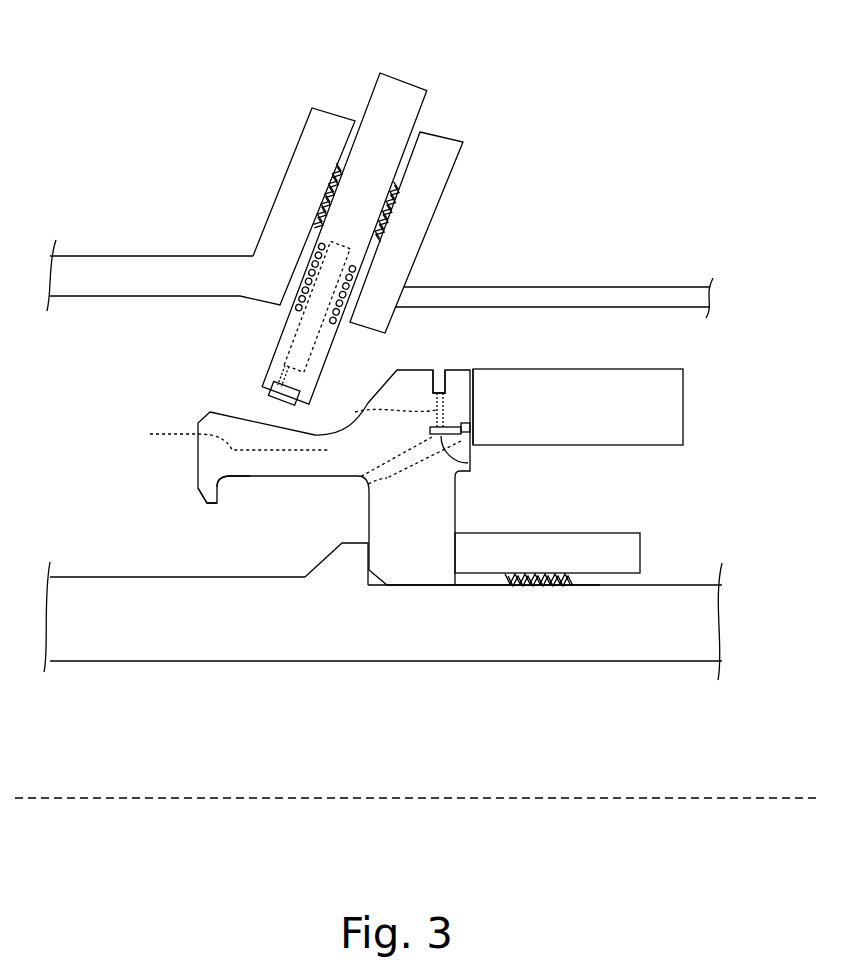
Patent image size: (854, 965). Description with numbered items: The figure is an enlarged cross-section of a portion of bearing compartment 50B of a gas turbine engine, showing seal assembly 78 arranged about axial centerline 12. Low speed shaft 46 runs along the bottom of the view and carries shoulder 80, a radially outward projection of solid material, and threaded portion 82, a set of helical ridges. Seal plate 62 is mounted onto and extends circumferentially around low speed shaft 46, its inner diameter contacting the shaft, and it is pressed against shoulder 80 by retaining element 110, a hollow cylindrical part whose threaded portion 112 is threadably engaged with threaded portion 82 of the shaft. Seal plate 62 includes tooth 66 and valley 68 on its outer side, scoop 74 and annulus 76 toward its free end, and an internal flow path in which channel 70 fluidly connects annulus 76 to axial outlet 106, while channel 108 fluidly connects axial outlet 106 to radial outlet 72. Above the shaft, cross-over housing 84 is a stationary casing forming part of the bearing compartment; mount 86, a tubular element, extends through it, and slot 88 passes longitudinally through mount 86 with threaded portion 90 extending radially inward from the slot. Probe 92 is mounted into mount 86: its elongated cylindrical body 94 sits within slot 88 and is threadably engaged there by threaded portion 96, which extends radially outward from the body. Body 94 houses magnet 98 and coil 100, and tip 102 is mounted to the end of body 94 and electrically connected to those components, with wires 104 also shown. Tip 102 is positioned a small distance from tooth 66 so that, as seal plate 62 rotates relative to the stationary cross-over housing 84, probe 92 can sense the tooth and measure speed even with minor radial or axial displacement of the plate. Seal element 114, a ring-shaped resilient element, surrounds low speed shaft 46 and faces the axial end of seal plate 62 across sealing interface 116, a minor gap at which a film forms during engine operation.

The bearing compartment 50B is at (136, 76).
The axial centerline 12 is at (117, 798).
The low speed shaft 46 is at (98, 577).
The seal plate 62 is at (420, 366).
The tooth 66 is at (200, 423).
The valley 68 is at (225, 435).
The channel 70 is at (362, 478).
The radial outlet 72 is at (456, 364).
The scoop 74 is at (198, 493).
The annulus 76 is at (250, 476).
The seal assembly 78 is at (86, 417).
The shoulder 80 is at (318, 562).
The threaded portion 82 is at (541, 586).
The cross-over housing 84 is at (140, 256).
The mount 86 is at (441, 200).
The slot 88 is at (411, 157).
The threaded portion 90 is at (328, 196).
The probe 92 is at (343, 241).
The body 94 is at (344, 238).
The threaded portion 96 is at (387, 212).
The magnet 98 is at (327, 283).
The coil 100 is at (317, 306).
The tip 102 is at (283, 393).
The wires 104 is at (283, 375).
The axial outlet 106 is at (470, 465).
The channel 108 is at (376, 411).
The retaining element 110 is at (641, 545).
The threaded portion 112 is at (533, 572).
The seal element 114 is at (684, 398).
The sealing interface 116 is at (479, 363).